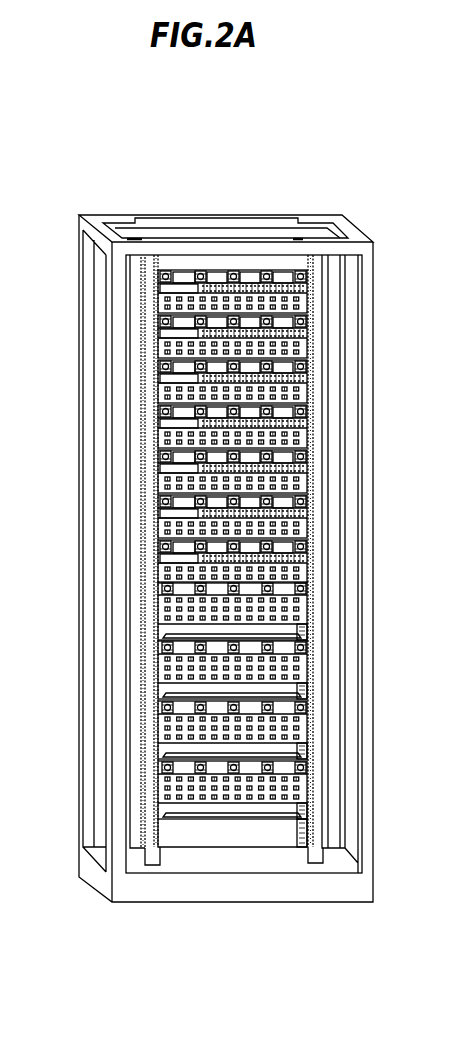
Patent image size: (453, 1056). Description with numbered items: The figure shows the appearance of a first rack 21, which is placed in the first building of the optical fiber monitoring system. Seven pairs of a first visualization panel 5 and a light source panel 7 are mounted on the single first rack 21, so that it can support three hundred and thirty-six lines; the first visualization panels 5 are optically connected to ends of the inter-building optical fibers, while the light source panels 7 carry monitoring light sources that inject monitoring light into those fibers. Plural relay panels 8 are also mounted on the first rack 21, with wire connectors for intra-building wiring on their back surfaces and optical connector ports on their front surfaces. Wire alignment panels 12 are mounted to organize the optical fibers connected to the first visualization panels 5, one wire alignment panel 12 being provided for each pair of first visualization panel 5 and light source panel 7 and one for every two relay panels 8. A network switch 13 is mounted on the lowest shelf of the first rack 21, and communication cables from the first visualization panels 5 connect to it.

The first rack 21 is at (208, 200).
The wire alignment panel 12 is at (158, 765).
The first visualization panel 5 is at (158, 560).
The light source panel 7 is at (158, 575).
The relay panel 8 is at (158, 790).
The network switch 13 is at (160, 800).